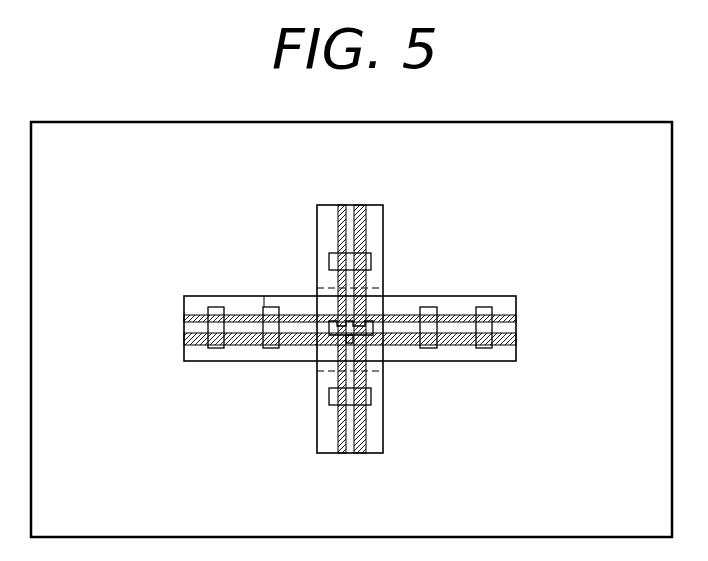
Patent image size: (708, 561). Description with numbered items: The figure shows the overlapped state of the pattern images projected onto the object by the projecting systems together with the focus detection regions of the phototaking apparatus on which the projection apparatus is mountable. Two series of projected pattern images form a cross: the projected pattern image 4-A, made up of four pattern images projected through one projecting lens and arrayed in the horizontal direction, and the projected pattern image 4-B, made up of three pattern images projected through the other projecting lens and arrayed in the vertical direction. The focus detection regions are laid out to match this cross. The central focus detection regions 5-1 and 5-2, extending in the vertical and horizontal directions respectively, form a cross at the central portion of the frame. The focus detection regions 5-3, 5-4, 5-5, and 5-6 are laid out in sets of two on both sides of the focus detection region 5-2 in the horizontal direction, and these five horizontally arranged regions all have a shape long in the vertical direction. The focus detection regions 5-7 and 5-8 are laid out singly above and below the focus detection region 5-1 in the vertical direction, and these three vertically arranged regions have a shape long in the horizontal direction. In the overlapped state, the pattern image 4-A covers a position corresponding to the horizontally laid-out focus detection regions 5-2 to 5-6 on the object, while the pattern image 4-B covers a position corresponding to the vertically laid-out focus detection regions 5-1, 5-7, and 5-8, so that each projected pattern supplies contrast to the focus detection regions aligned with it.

The projected pattern image 4-A is at (478, 297).
The projected pattern image 4-B is at (383, 210).
The central focus detection region 5-1 is at (378, 340).
The central focus detection region 5-2 is at (346, 352).
The focus detection region 5-3 is at (214, 306).
The focus detection region 5-4 is at (272, 306).
The focus detection region 5-5 is at (434, 307).
The focus detection region 5-6 is at (492, 312).
The focus detection region 5-7 is at (383, 258).
The focus detection region 5-8 is at (329, 396).